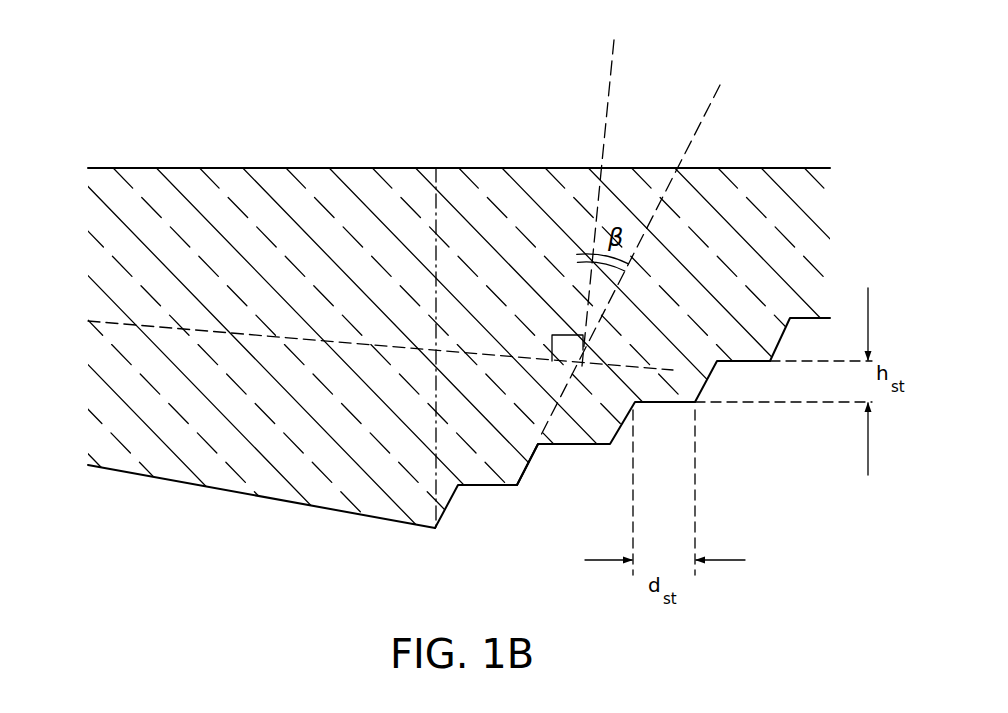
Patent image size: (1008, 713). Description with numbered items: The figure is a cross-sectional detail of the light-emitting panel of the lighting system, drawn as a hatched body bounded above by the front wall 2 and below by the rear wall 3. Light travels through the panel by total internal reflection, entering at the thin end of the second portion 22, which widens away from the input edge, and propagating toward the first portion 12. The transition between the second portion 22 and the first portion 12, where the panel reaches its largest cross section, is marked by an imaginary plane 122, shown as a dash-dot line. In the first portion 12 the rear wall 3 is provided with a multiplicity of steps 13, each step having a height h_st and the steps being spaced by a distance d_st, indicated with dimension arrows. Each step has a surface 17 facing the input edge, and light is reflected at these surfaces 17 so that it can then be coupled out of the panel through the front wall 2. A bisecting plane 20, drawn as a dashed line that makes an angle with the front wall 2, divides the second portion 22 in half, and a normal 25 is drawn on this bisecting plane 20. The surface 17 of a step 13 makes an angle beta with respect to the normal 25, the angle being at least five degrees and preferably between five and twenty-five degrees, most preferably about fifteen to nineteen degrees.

The front wall 2 is at (121, 167).
The second portion 22 is at (242, 124).
The imaginary plane 122 is at (436, 207).
The first portion 12 is at (502, 122).
The normal 25 is at (612, 80).
The bisecting plane 20 is at (138, 326).
The rear wall 3 is at (196, 487).
The surface 17 is at (527, 463).
The steps 13 is at (544, 458).